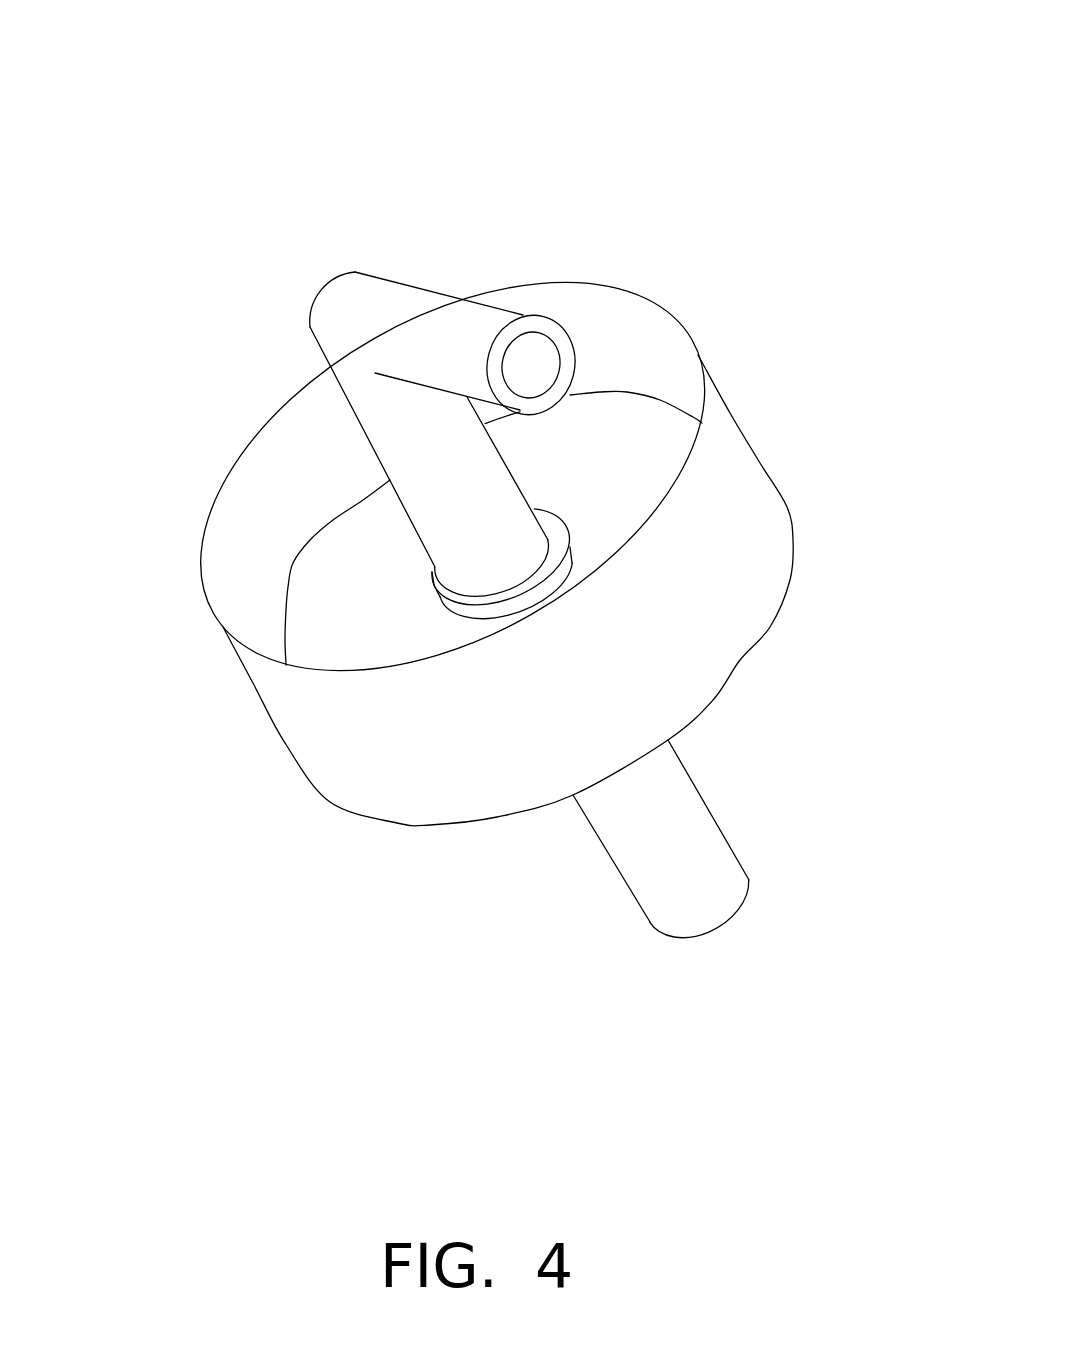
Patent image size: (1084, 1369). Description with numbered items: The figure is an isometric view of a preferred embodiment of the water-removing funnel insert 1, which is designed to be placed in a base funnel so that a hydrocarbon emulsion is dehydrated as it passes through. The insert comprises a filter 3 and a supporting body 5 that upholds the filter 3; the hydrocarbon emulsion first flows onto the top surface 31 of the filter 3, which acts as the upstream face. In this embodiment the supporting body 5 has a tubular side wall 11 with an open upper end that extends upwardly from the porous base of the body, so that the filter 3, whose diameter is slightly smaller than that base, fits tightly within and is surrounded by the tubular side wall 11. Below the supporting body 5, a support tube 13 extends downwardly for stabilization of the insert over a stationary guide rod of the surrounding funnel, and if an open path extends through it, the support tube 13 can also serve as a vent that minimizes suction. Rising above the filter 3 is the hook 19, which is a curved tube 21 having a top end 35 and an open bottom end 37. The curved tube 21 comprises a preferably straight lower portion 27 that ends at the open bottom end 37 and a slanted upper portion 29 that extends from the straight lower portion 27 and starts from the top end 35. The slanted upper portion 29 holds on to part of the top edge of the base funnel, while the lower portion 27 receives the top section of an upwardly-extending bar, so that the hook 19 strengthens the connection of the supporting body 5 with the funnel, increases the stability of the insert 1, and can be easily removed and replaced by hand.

The water-removing funnel insert 1 is at (857, 273).
The filter 3 is at (337, 627).
The supporting body 5 is at (458, 825).
The tubular side wall 11 is at (285, 743).
The support tube 13 is at (622, 875).
The hook 19 is at (433, 285).
The curved tube 21 is at (482, 303).
The lower portion 27 is at (312, 335).
The slanted upper portion 29 is at (368, 273).
The top surface 31 is at (350, 583).
The top end 35 is at (558, 345).
The open bottom end 37 is at (572, 565).